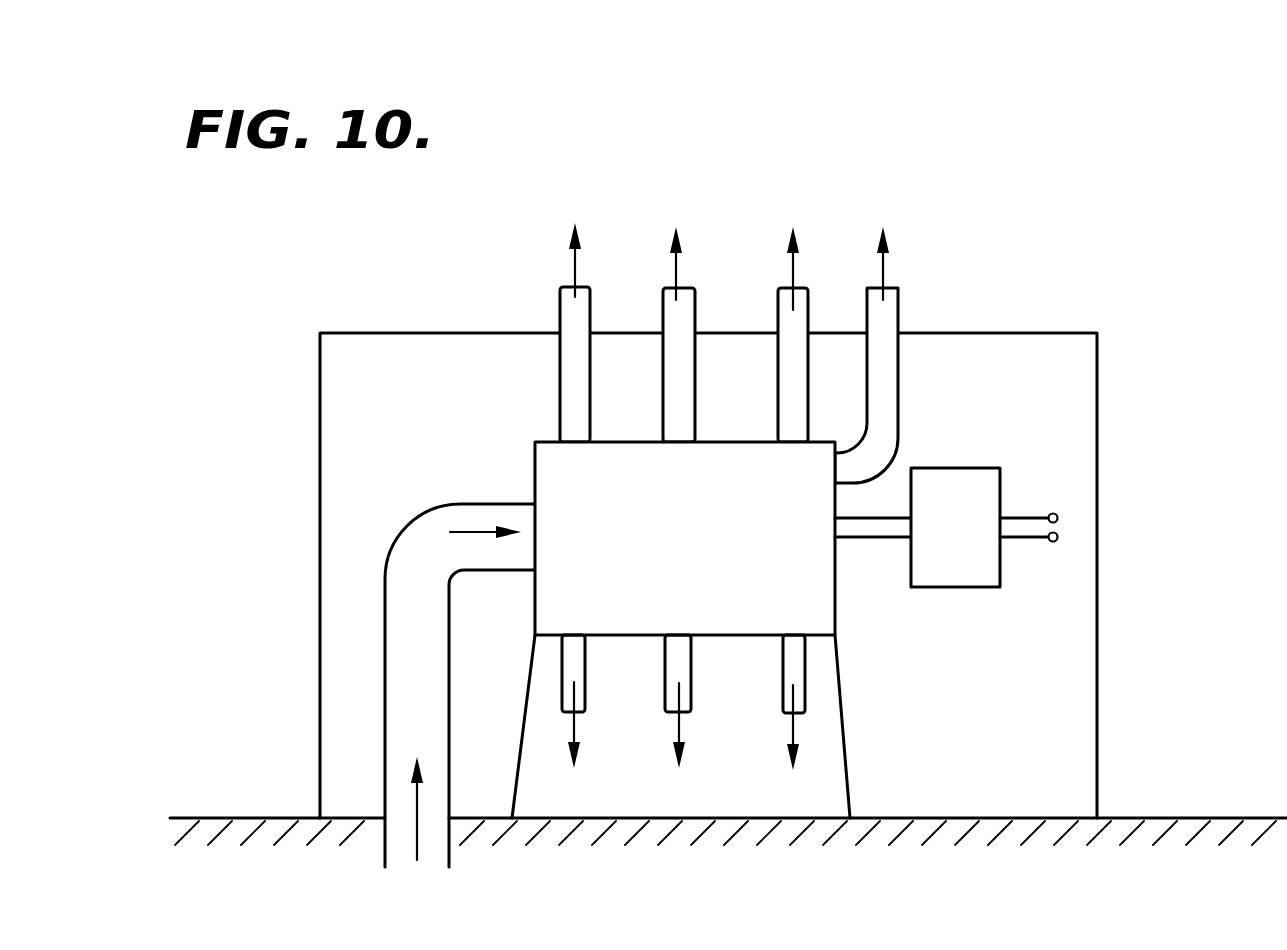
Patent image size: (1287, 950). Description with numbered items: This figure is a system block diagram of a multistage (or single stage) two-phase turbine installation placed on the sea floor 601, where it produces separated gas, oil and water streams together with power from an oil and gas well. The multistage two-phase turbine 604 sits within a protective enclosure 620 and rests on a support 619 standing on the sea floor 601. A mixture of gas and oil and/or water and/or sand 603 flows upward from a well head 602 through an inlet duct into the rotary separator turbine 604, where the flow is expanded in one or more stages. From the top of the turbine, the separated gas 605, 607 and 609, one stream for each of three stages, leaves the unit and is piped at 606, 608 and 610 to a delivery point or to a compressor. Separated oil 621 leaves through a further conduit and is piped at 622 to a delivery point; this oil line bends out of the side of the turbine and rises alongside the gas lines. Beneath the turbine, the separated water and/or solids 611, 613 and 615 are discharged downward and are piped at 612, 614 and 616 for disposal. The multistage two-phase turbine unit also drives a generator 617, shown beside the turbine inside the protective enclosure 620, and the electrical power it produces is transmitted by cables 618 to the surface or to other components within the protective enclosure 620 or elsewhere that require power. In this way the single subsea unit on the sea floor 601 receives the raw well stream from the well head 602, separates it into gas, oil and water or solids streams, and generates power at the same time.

The sea floor 601 is at (1158, 818).
The well head 602 is at (397, 657).
The mixture of gas and oil and/or water and/or sand 603 is at (472, 533).
The multistage two-phase turbine 604 is at (685, 538).
The separated gas 605 is at (570, 265).
The gas pipe 606 is at (560, 307).
The separated gas 607 is at (672, 275).
The gas pipe 608 is at (663, 300).
The separated gas 609 is at (798, 257).
The gas pipe 610 is at (777, 307).
The separated water and/or solids 611 is at (575, 722).
The disposal pipe 612 is at (562, 665).
The separated water and/or solids 613 is at (680, 723).
The disposal pipe 614 is at (665, 672).
The separated water and/or solids 615 is at (795, 728).
The disposal pipe 616 is at (805, 663).
The generator 617 is at (917, 527).
The cables 618 is at (1017, 519).
The support 619 is at (847, 752).
The protective enclosure 620 is at (1097, 412).
The separated oil 621 is at (887, 275).
The oil pipe 622 is at (887, 310).